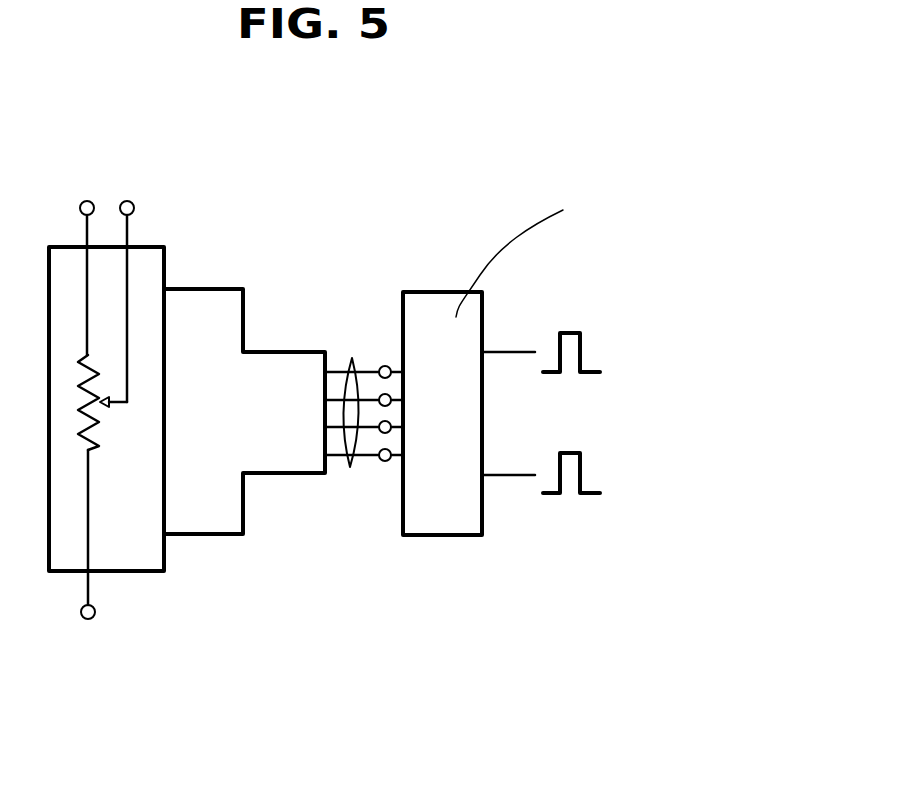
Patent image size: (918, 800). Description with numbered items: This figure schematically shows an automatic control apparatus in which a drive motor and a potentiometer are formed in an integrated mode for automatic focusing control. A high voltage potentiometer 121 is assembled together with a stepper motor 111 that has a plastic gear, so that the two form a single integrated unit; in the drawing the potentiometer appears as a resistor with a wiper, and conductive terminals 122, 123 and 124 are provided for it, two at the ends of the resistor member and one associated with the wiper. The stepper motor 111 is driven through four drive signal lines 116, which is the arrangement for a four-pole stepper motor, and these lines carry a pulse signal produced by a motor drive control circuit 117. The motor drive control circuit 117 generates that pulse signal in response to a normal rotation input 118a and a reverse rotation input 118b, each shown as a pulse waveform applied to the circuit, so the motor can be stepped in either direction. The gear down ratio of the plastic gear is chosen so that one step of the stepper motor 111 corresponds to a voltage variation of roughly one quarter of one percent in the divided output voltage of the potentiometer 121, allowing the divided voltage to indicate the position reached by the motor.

The stepper motor 111 is at (215, 289).
The drive signal lines 116 is at (355, 358).
The motor drive control circuit 117 is at (448, 292).
The normal rotation input 118a is at (520, 352).
The reverse rotation input 118b is at (523, 475).
The high voltage potentiometer 121 is at (146, 247).
The conductive terminal 122 is at (95, 612).
The conductive terminal 123 is at (127, 201).
The conductive terminal 124 is at (86, 201).